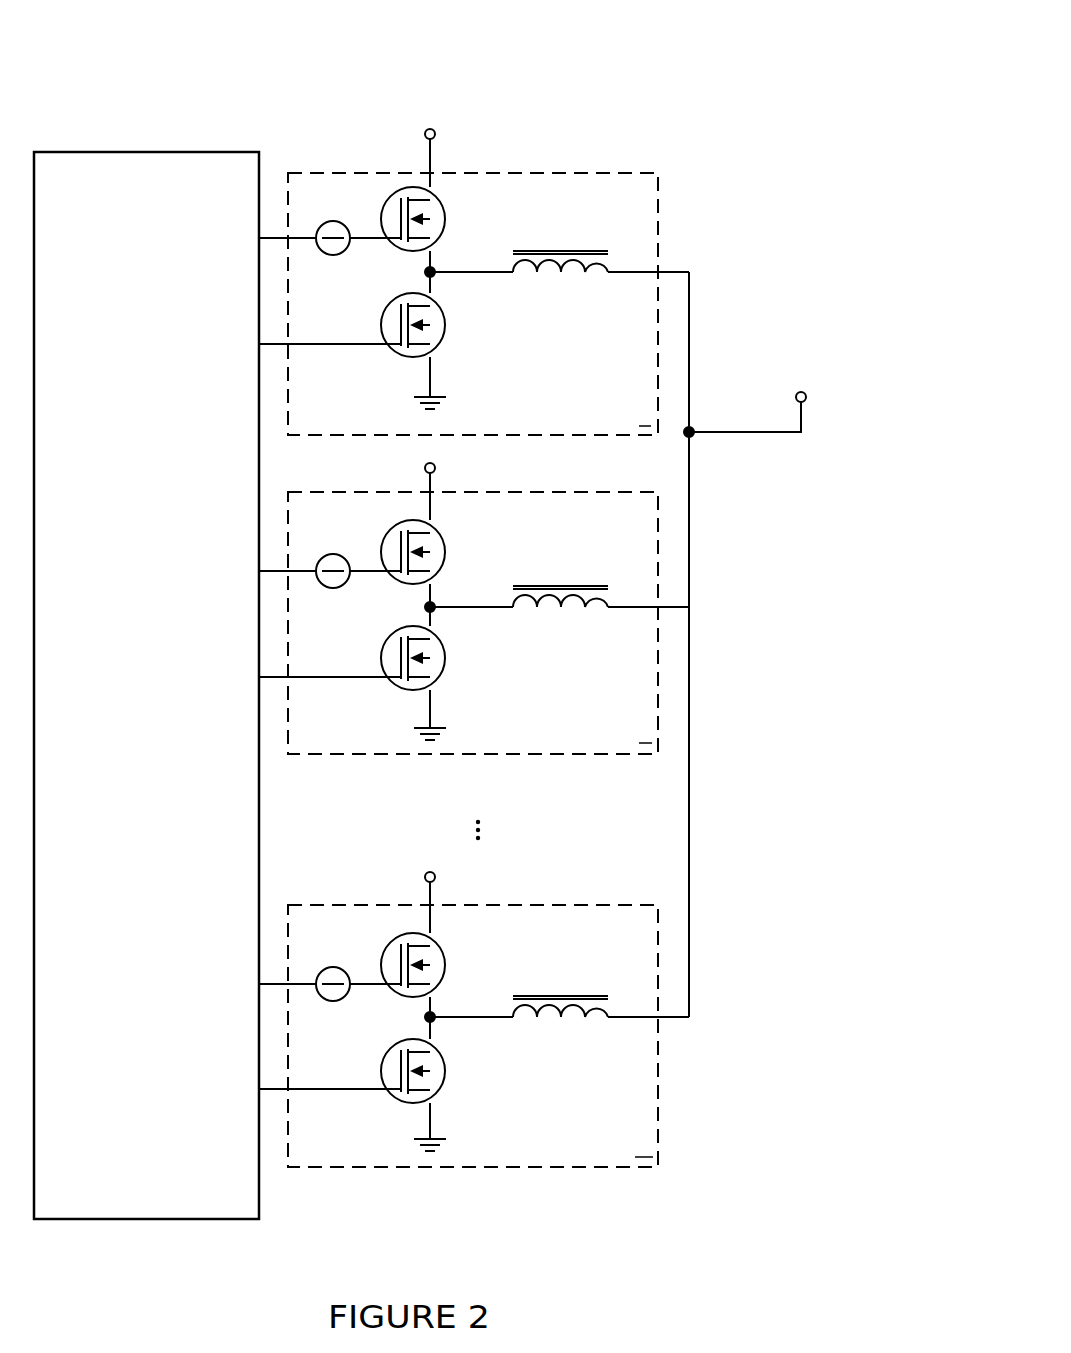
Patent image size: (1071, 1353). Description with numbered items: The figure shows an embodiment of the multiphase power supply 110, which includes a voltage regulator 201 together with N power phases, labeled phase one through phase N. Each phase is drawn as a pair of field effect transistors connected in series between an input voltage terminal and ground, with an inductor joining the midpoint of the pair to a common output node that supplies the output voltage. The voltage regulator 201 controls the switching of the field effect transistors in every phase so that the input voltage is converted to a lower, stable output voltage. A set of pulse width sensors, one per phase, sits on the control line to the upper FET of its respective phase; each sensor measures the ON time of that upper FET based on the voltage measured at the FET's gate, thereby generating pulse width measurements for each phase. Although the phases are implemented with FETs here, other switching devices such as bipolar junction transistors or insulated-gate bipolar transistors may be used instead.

The multiphase power supply 110 is at (755, 43).
The voltage regulator 201 is at (164, 710).